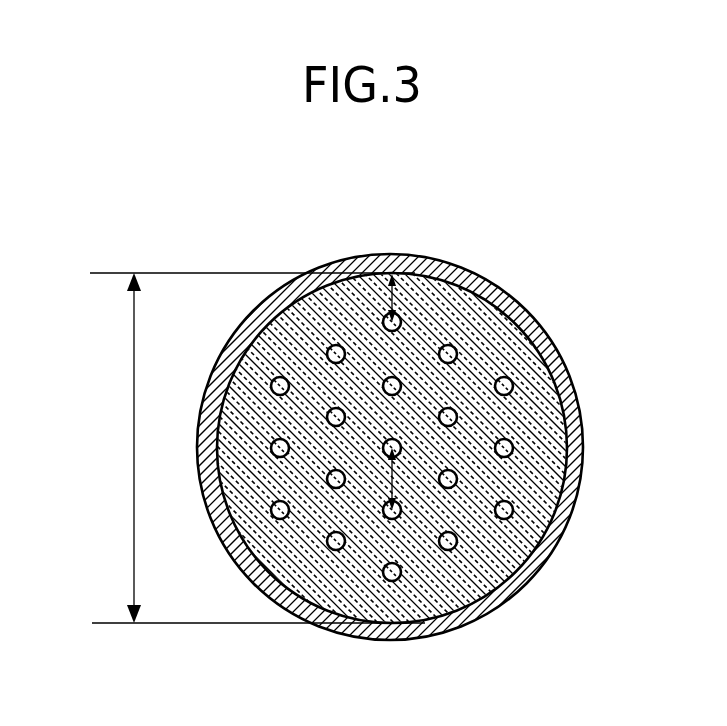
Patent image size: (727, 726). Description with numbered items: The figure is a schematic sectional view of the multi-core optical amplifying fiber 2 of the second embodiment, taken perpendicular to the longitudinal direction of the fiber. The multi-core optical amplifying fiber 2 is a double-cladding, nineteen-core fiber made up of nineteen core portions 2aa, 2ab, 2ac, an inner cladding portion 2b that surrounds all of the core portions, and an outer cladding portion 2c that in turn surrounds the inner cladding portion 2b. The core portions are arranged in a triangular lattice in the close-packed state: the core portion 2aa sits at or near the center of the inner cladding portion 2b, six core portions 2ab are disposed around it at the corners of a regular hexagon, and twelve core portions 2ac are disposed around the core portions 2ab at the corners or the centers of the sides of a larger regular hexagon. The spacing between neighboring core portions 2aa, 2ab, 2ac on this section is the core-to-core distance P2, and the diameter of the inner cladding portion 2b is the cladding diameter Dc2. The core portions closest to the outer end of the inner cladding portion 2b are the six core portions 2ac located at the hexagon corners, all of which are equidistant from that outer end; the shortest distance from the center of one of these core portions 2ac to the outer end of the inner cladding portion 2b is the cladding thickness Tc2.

The multi-core optical amplifying fiber 2 is at (541, 230).
The inner cladding portion 2b is at (538, 514).
The outer cladding portion 2c is at (545, 556).
The core portion 2aa is at (393, 440).
The core portion 2ab is at (450, 478).
The core portion 2ac is at (500, 440).
The cladding diameter Dc2 is at (134, 416).
The cladding thickness Tc2 is at (432, 272).
The core-to-core distance P2 is at (400, 465).